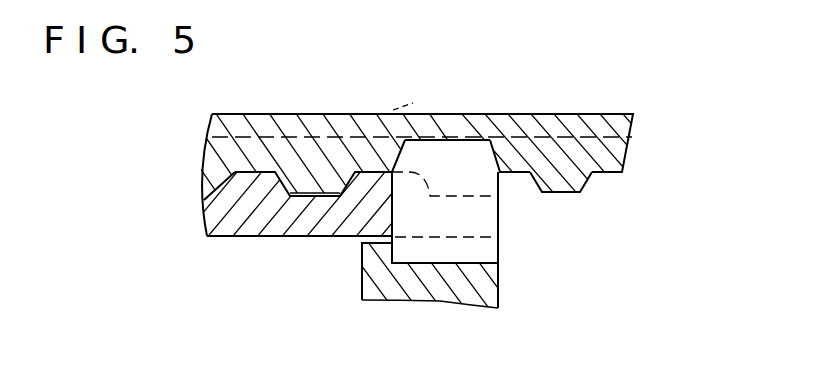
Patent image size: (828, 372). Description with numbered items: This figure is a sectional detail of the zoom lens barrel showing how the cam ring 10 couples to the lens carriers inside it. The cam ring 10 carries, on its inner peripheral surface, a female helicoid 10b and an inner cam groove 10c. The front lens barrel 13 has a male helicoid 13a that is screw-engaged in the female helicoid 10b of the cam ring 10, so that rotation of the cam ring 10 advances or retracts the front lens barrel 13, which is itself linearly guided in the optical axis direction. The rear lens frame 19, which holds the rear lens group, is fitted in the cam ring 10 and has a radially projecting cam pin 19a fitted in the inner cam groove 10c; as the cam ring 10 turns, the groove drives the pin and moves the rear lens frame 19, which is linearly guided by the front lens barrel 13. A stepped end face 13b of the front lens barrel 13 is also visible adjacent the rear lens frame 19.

The cam ring 10 is at (571, 118).
The female helicoid 10b is at (573, 192).
The inner cam groove 10c is at (414, 147).
The front lens barrel 13 is at (245, 229).
The male helicoid 13a is at (252, 178).
The end face of slider member 13b is at (392, 213).
The rear lens frame 19 is at (490, 298).
The cam pin 19a is at (493, 220).